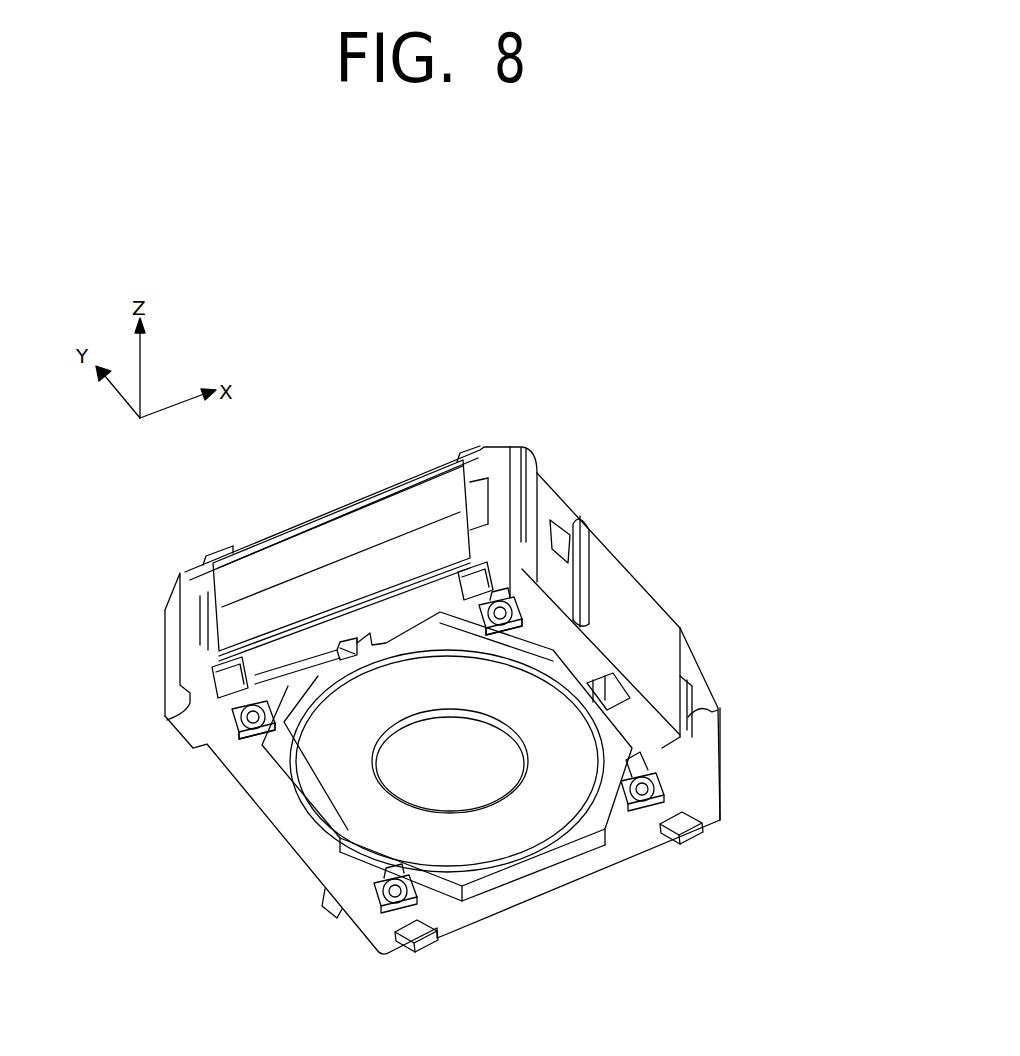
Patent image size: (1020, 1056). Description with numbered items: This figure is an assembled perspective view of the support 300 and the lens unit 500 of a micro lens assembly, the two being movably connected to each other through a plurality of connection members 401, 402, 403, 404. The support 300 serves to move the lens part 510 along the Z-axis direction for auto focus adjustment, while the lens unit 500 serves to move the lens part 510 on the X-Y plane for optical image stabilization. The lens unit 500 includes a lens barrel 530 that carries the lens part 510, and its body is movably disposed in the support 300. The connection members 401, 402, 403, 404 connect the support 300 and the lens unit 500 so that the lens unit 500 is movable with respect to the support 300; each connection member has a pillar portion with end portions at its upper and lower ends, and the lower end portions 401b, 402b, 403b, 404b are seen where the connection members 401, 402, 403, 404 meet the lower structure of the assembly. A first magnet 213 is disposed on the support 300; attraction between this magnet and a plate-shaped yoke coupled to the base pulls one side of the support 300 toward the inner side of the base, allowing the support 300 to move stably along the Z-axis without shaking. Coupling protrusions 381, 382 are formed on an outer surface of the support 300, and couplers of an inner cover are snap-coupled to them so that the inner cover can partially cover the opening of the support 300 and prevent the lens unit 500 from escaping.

The first magnet 213 is at (345, 533).
The support 300 is at (670, 608).
The coupling protrusion 381 is at (712, 710).
The coupling protrusion 382 is at (562, 548).
The first connection member 401 is at (634, 828).
The lower end portion 401b is at (665, 797).
The connection member 402 is at (502, 587).
The lower end portion 402b is at (518, 627).
The connection member 403 is at (241, 746).
The lower end portion 403b is at (235, 725).
The connection member 404 is at (382, 917).
The lower end portion 404b is at (417, 944).
The lens unit 500 is at (490, 886).
The lens part 510 is at (432, 790).
The lens barrel 530 is at (537, 825).